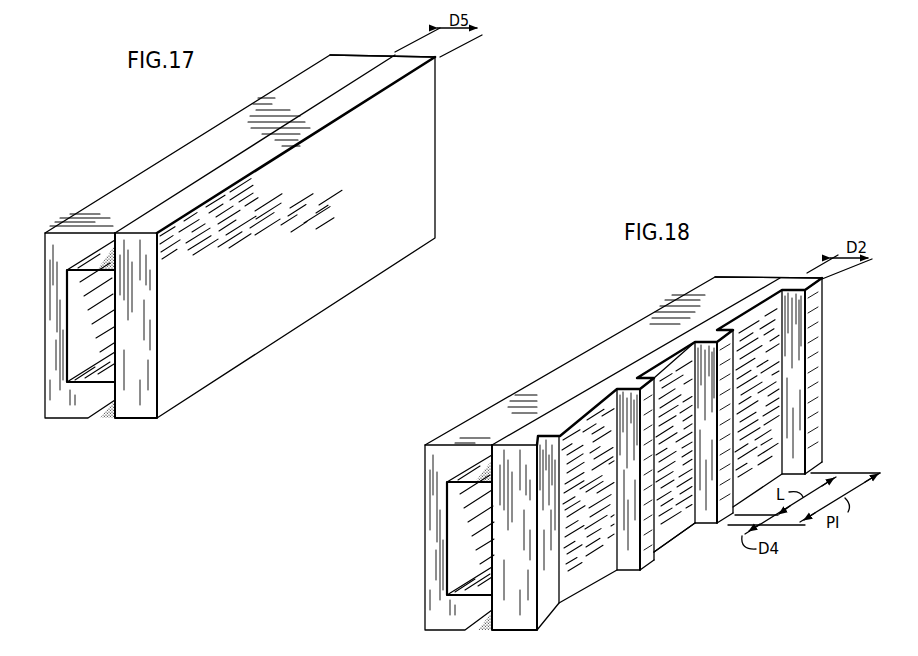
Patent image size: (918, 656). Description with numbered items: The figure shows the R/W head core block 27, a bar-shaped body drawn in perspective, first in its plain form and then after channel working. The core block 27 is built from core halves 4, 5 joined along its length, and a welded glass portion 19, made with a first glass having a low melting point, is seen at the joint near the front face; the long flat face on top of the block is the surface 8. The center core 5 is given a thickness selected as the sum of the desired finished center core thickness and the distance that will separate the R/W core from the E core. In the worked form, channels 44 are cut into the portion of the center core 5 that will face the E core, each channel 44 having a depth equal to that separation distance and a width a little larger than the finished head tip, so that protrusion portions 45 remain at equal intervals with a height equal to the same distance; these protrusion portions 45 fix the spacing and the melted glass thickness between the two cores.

In FIG. 17, the first core half 4 is at (52, 387).
In FIG. 18, the first core half 4 is at (438, 597).
In FIG. 17, the center core 5 is at (138, 407).
In FIG. 18, the center core 5 is at (525, 618).
In FIG. 17, the top surface 8 is at (305, 113).
In FIG. 18, the top surface 8 is at (573, 395).
In FIG. 17, the welded glass portion 19 is at (97, 265).
In FIG. 18, the welded glass portion 19 is at (483, 478).
In FIG. 17, the R/W head core block 27 is at (373, 300).
In FIG. 18, the R/W head core block 27 is at (455, 431).
In FIG. 18, the channels 44 is at (763, 327).
In FIG. 18, the protrusion portions 45 is at (817, 456).